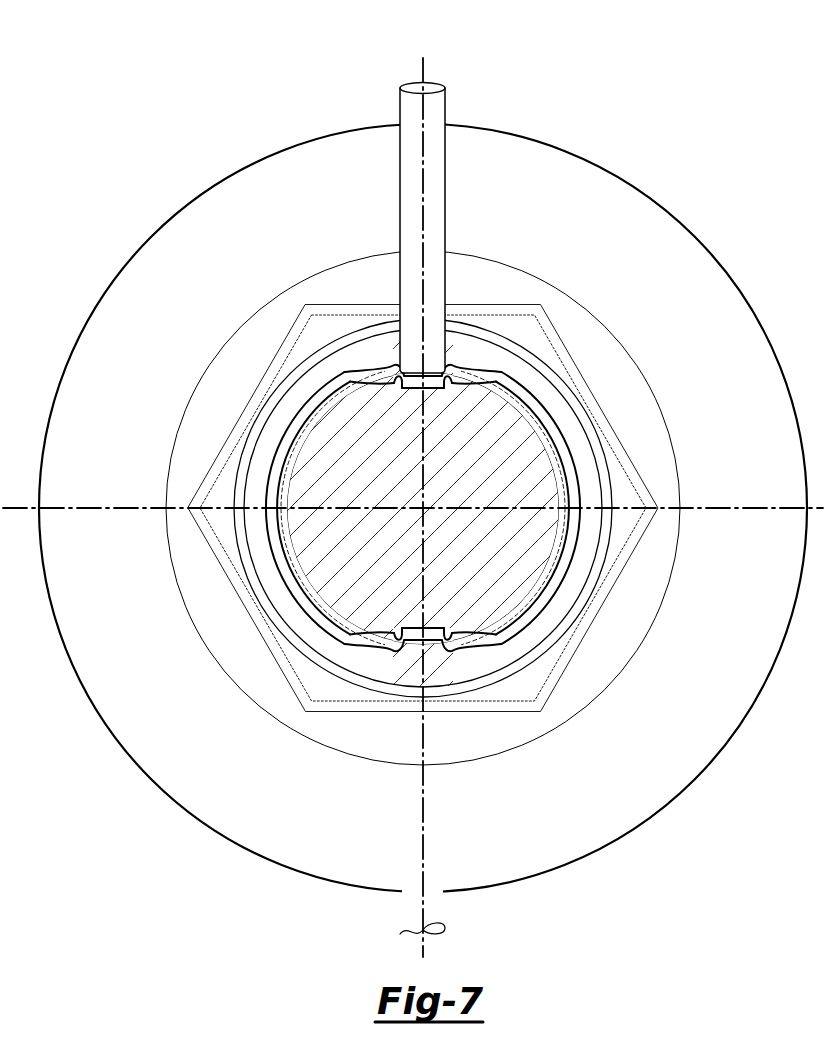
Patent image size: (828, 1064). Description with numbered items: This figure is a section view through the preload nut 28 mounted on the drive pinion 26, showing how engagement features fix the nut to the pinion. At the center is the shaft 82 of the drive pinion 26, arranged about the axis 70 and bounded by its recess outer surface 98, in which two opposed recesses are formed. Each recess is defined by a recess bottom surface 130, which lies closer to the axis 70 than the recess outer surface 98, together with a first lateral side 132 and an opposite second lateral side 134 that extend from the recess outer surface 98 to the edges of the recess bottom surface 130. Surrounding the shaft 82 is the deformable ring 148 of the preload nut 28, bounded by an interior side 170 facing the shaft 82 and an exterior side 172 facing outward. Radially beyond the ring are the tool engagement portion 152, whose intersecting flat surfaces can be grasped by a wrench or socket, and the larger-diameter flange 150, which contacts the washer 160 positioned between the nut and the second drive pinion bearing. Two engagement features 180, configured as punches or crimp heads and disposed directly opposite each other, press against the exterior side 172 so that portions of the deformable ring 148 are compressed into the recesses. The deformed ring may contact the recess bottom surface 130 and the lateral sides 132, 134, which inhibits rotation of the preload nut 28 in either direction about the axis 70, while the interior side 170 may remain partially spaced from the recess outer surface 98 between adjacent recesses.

The washer 160 is at (310, 141).
The engagement feature 180 is at (445, 110).
The preload nut 28 is at (423, 504).
The flange 150 is at (588, 308).
The tool engagement portion 152 is at (567, 370).
The deformable ring 148 is at (497, 484).
The exterior side 172 is at (585, 425).
The drive pinion 26 is at (435, 500).
The shaft 82 is at (435, 500).
The recess outer surface 98 is at (560, 538).
The interior side 170 is at (407, 392).
The recess bottom surface 130 is at (436, 392).
The first lateral side 132 is at (398, 390).
The second lateral side 134 is at (448, 390).
The axis 70 is at (424, 506).